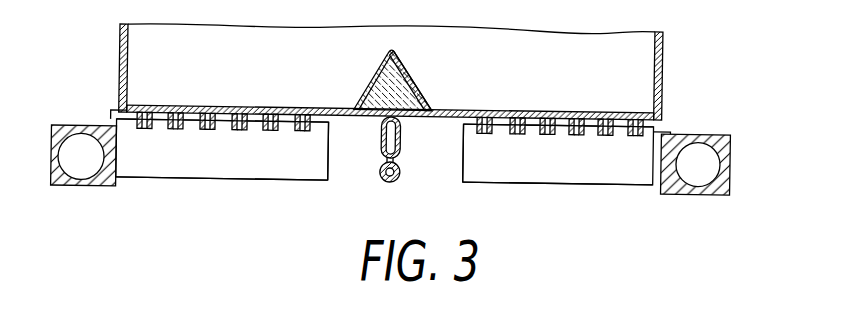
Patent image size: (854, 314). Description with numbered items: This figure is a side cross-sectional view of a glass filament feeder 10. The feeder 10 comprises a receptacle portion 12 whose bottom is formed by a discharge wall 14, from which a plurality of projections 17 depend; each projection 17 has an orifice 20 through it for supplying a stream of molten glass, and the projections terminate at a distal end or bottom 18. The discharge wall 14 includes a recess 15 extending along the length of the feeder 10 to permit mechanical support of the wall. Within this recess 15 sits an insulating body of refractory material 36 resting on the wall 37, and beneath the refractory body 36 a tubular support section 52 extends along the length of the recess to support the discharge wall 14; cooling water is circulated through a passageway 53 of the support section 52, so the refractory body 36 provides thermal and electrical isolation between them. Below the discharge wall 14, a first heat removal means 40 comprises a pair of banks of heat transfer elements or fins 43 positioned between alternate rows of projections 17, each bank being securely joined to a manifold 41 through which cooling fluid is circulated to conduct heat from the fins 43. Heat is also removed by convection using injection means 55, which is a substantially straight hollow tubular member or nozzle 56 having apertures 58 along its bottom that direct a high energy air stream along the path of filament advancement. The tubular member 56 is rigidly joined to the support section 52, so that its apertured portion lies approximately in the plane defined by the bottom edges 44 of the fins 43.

The feeder 10 is at (672, 62).
The receptacle portion 12 is at (120, 68).
The discharge wall 14 is at (331, 118).
The recess 15 is at (402, 59).
The projections 17 is at (131, 121).
The bottom of projections 18 is at (157, 122).
The orifice 20 is at (147, 111).
The refractory body 36 is at (402, 81).
The bottom plate 37 is at (366, 119).
The first heat removal means 40 is at (98, 111).
The manifold 41 is at (88, 188).
The heat transfer elements 43 is at (238, 172).
The bottom edges 44 is at (184, 178).
The support section 52 is at (403, 121).
The passageway 53 is at (384, 137).
The injection means 55 is at (369, 166).
The tubular member 56 is at (401, 167).
The apertures 58 is at (394, 178).